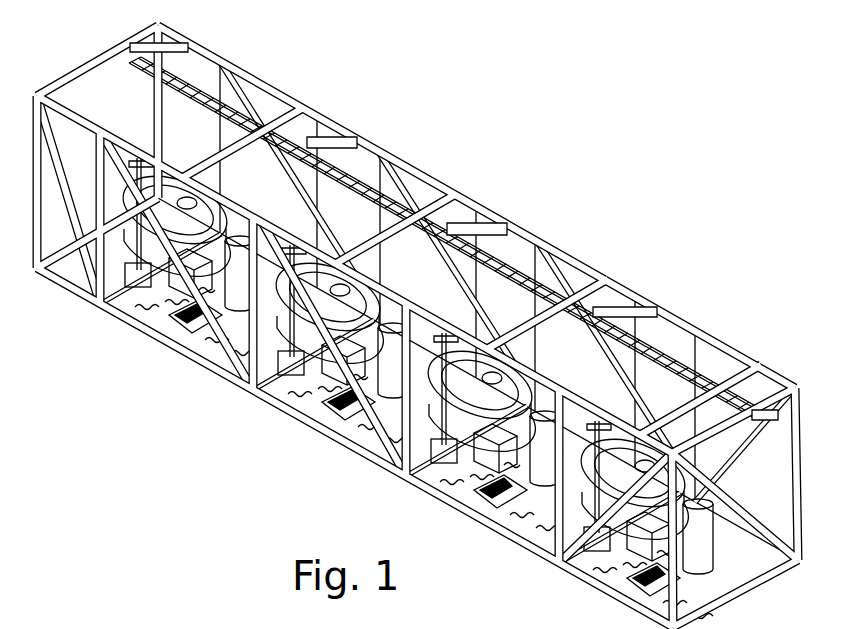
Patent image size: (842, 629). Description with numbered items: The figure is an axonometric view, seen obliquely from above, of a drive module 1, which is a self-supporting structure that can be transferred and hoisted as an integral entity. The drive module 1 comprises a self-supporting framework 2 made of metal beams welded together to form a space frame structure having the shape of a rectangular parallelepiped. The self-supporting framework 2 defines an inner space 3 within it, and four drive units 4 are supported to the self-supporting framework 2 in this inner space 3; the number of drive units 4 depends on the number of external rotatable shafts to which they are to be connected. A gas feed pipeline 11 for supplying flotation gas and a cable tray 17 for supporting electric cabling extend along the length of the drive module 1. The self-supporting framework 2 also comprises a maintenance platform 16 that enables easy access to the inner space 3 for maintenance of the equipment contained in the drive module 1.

The drive module 1 is at (441, 80).
The self-supporting framework 2 is at (218, 54).
The inner space 3 is at (497, 283).
The drive unit 4 is at (190, 200).
The gas feed pipeline 11 is at (447, 424).
The maintenance platform 16 is at (450, 498).
The cable tray 17 is at (330, 162).